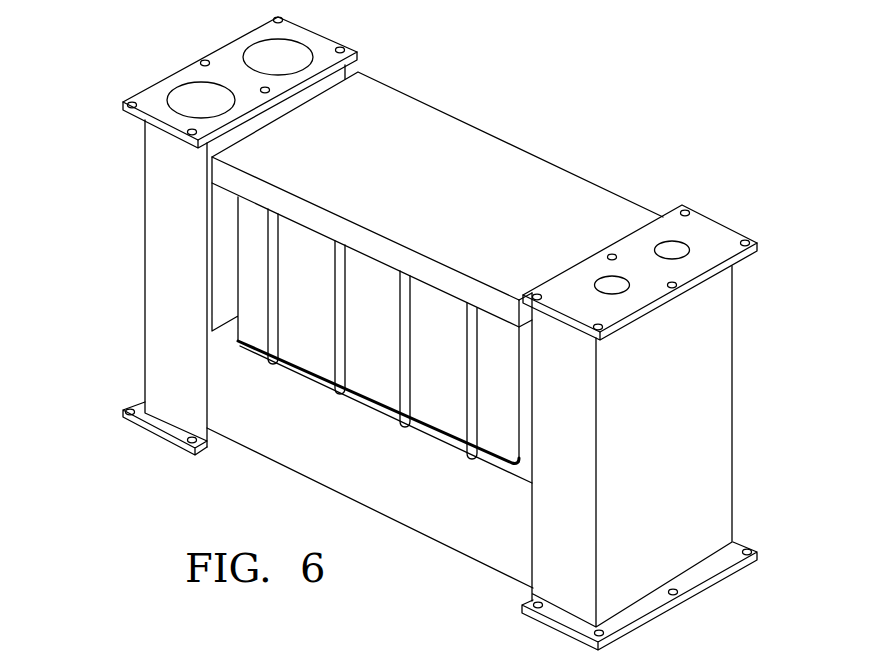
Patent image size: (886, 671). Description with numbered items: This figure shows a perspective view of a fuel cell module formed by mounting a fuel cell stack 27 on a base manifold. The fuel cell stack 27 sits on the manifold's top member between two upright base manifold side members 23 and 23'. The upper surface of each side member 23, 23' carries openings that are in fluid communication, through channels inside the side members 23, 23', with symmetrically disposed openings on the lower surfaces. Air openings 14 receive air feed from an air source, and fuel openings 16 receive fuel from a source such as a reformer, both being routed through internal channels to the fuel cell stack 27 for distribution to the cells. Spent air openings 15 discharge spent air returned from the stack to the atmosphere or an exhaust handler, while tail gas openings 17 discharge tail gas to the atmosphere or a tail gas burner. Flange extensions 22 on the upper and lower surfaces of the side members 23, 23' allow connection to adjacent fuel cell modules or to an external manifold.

The air opening 14 is at (278, 57).
The spent air opening 15 is at (188, 95).
The fuel opening 16 is at (670, 247).
The tail gas opening 17 is at (600, 278).
The flange extension 22 is at (125, 113).
The base manifold side member 23 is at (669, 446).
The base manifold side member 23' is at (286, 326).
The fuel cell stack 27 is at (490, 150).